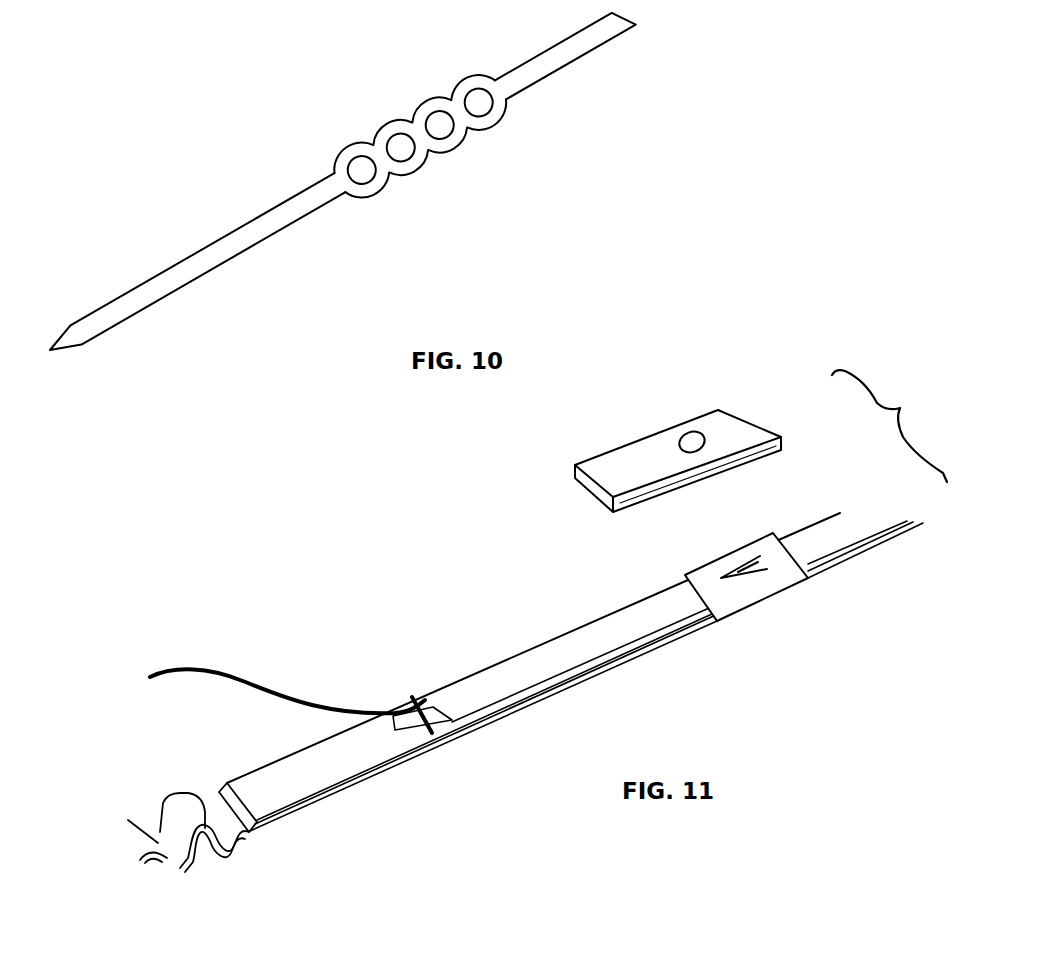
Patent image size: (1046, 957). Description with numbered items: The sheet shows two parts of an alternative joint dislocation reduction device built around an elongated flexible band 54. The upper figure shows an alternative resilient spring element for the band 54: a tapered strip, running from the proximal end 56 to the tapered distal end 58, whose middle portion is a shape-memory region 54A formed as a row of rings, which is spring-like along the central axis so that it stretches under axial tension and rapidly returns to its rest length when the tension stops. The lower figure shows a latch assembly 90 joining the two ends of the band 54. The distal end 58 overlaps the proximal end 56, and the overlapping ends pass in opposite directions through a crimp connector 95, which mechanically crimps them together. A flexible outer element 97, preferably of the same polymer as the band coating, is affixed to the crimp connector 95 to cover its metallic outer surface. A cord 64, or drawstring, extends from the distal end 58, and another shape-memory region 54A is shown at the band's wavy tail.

In FIG. 11, the elongated flexible band 54 is at (375, 765).
In FIG. 10, the shape-memory region 54A is at (453, 43).
In FIG. 11, the shape-memory region 54A is at (120, 942).
In FIG. 10, the proximal end 56 is at (633, 52).
In FIG. 11, the proximal end 56 is at (703, 637).
In FIG. 10, the distal end 58 is at (76, 370).
In FIG. 11, the distal end 58 is at (449, 670).
In FIG. 11, the cord 64 is at (263, 685).
In FIG. 11, the latch assembly 90 is at (432, 530).
In FIG. 11, the crimp connector 95 is at (700, 573).
In FIG. 11, the flexible outer element 97 is at (653, 455).